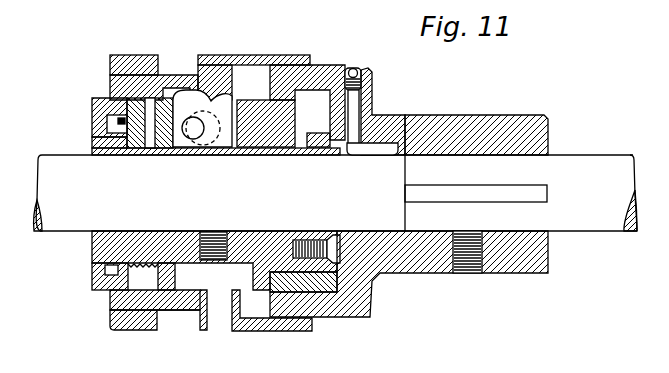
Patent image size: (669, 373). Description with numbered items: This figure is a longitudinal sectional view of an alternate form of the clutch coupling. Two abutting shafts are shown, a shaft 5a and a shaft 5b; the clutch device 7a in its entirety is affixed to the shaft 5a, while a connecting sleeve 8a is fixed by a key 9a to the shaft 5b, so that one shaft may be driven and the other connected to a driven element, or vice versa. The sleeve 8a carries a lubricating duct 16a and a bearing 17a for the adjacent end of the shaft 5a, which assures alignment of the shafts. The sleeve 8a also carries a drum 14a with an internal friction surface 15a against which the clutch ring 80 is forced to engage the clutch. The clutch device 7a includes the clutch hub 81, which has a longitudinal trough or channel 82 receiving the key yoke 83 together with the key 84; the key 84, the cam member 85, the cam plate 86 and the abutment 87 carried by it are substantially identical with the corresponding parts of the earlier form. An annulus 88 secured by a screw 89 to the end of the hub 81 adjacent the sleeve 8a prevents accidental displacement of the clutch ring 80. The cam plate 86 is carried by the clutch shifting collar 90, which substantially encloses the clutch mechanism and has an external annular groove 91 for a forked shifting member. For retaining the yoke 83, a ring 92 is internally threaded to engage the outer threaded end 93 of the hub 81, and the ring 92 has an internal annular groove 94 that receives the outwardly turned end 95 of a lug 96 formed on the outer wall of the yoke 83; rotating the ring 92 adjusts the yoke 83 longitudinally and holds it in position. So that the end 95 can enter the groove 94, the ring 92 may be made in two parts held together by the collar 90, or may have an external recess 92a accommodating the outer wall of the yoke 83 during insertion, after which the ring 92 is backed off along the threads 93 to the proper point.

The shaft 5a is at (63, 222).
The shaft 5b is at (573, 173).
The clutch device 7a is at (92, 128).
The connecting sleeve 8a is at (450, 127).
The key 9a is at (510, 195).
The drum 14a is at (355, 68).
The internal friction surface 15a is at (308, 92).
The lubricating duct 16a is at (374, 89).
The bearing 17a is at (375, 140).
The clutch ring 80 is at (318, 293).
The clutch hub 81 is at (93, 247).
The longitudinal trough or channel 82 is at (272, 148).
The key yoke 83 is at (157, 62).
The key 84 is at (243, 100).
The cam member 85 is at (213, 55).
The cam plate 86 is at (137, 92).
The abutment 87 is at (232, 70).
The annulus 88 is at (338, 255).
The screw 89 is at (320, 258).
The clutch shifting collar 90 is at (143, 331).
The external annular groove 91 is at (180, 311).
The ring 92 is at (103, 97).
The external recess 92a is at (122, 55).
The outer threaded end 93 is at (117, 307).
The internal annular groove 94 is at (95, 275).
The outwardly turned end 95 is at (107, 98).
The lug 96 is at (97, 135).